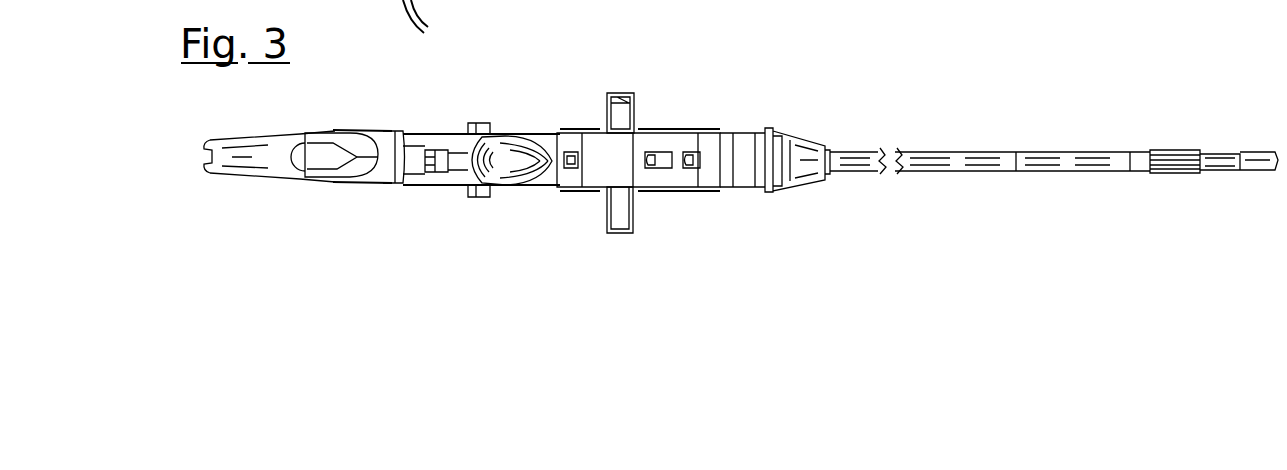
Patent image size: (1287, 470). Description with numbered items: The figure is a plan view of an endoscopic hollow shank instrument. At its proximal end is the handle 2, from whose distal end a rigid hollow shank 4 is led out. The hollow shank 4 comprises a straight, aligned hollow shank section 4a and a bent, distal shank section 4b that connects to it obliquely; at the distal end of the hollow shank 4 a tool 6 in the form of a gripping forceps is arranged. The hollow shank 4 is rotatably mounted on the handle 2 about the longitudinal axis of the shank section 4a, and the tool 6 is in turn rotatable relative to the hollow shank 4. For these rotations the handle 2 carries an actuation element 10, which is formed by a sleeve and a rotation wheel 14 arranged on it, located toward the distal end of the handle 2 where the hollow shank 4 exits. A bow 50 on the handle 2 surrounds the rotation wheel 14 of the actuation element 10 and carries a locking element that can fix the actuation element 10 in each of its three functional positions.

The handle 2 is at (497, 209).
The hollow shank 4 is at (1028, 151).
The hollow shank section 4a is at (955, 192).
The distal shank section 4b is at (1094, 192).
The tool 6 is at (1250, 192).
The actuation element 10 is at (641, 116).
The rotation wheel 14 is at (630, 93).
The bow 50 is at (605, 165).